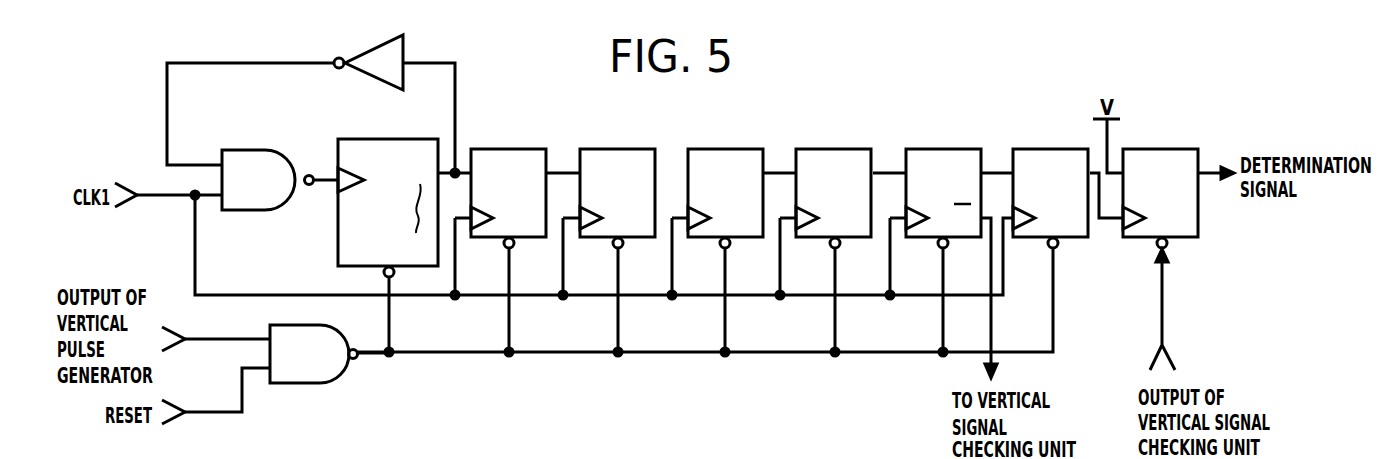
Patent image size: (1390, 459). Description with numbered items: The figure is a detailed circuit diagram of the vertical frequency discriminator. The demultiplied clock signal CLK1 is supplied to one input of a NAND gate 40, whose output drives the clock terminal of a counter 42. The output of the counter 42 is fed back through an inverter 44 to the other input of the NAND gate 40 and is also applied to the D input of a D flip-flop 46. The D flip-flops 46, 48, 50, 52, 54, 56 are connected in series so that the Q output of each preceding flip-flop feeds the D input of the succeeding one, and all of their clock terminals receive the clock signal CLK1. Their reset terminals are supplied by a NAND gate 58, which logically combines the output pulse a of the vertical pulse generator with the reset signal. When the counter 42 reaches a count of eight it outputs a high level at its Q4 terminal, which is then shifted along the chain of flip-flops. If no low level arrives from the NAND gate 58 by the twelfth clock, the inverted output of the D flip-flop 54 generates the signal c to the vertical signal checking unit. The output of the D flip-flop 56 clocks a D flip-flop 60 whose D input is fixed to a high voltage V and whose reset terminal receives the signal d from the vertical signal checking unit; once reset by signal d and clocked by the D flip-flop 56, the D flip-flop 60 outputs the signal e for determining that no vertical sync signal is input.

The NAND gate 40 is at (248, 150).
The counter 42 is at (393, 138).
The inverter 44 is at (378, 46).
The D flip-flop 46 is at (513, 148).
The D flip-flop 48 is at (622, 148).
The D flip-flop 50 is at (730, 148).
The D flip-flop 52 is at (838, 148).
The D flip-flop 54 is at (948, 148).
The D flip-flop 56 is at (1055, 148).
The NAND gate 58 is at (310, 384).
The D flip-flop 60 is at (1165, 148).
The output pulse from the vertical pulse generator a is at (238, 341).
The output signal c is at (991, 358).
The output signal of the vertical signal checking unit d is at (1163, 322).
The signal for determining no vertical sync signal input e is at (1204, 170).